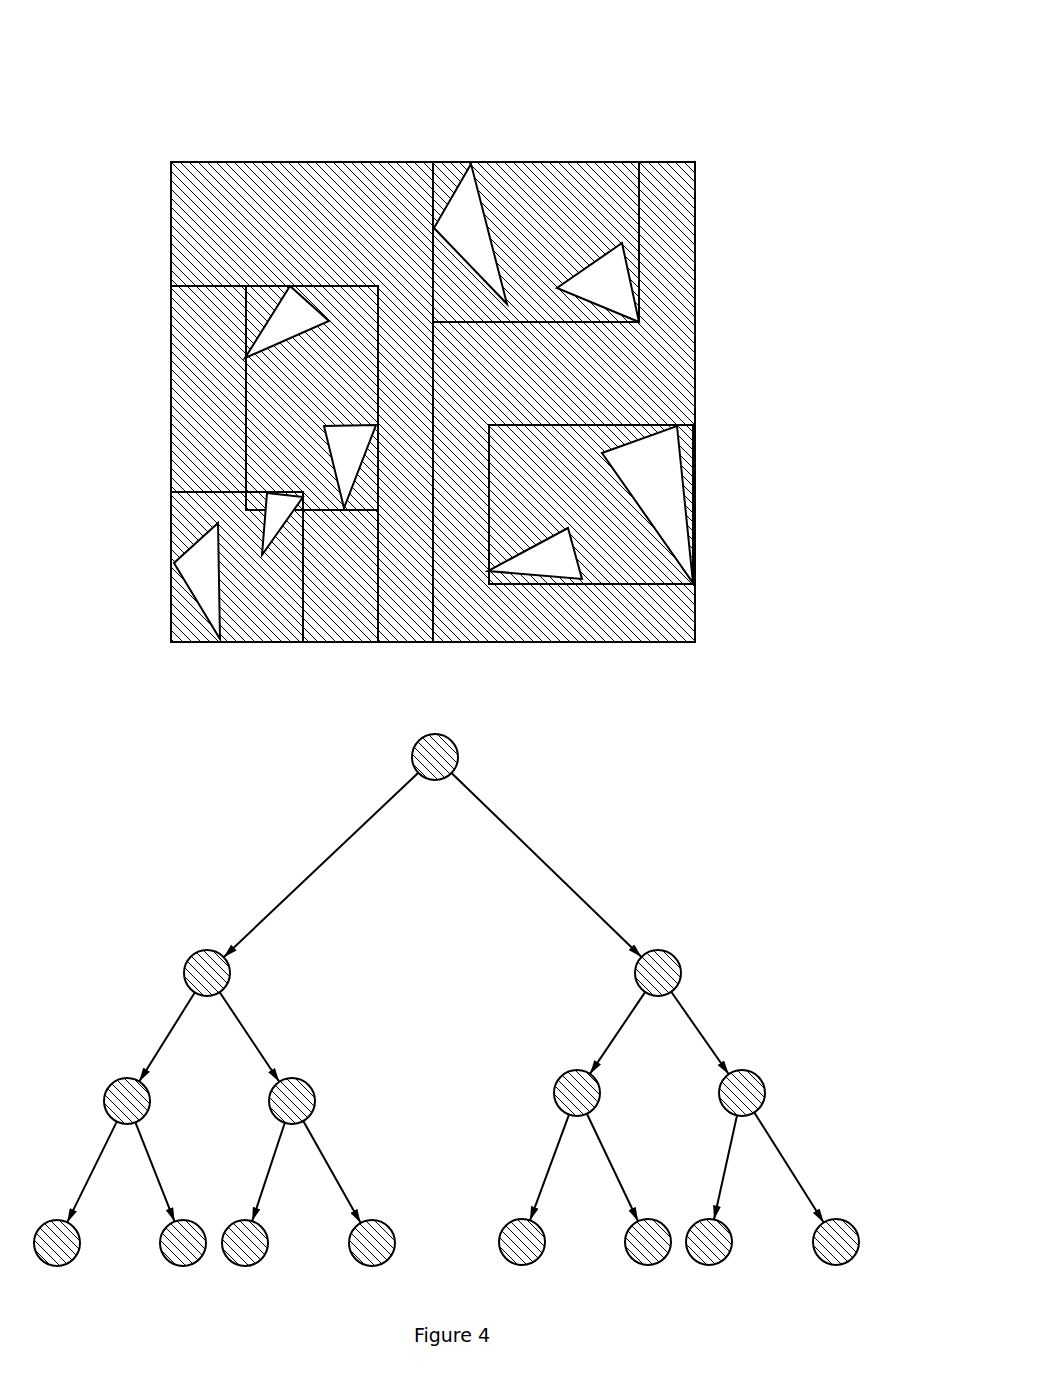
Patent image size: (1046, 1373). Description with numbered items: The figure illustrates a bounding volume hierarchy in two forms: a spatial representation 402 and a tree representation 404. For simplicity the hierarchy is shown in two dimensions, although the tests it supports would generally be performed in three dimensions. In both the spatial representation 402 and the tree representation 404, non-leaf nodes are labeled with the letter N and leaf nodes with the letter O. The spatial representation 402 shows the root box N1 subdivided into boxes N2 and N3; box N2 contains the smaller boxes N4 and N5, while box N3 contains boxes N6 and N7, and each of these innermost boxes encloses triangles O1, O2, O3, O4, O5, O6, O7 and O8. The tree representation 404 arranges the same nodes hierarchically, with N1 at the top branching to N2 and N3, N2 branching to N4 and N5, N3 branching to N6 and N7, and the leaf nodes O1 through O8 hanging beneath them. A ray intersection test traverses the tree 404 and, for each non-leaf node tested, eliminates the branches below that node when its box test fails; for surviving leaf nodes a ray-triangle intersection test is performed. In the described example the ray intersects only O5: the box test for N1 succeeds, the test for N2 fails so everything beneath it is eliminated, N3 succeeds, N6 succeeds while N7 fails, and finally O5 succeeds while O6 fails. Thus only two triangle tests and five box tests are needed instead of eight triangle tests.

The spatial representation 402 is at (283, 127).
The tree representation 404 is at (165, 795).
The non-leaf node N1 is at (321, 478).
The non-leaf node N2 is at (274, 641).
The non-leaf node N3 is at (557, 579).
The non-leaf node N4 is at (203, 808).
The non-leaf node N5 is at (312, 705).
The non-leaf node N6 is at (536, 639).
The non-leaf node N7 is at (627, 770).
The leaf node O1 is at (127, 916).
The leaf node O2 is at (231, 901).
The leaf node O3 is at (299, 867).
The leaf node O4 is at (323, 798).
The leaf node O5 is at (493, 737).
The leaf node O6 is at (614, 776).
The leaf node O7 is at (614, 919).
The leaf node O8 is at (734, 868).